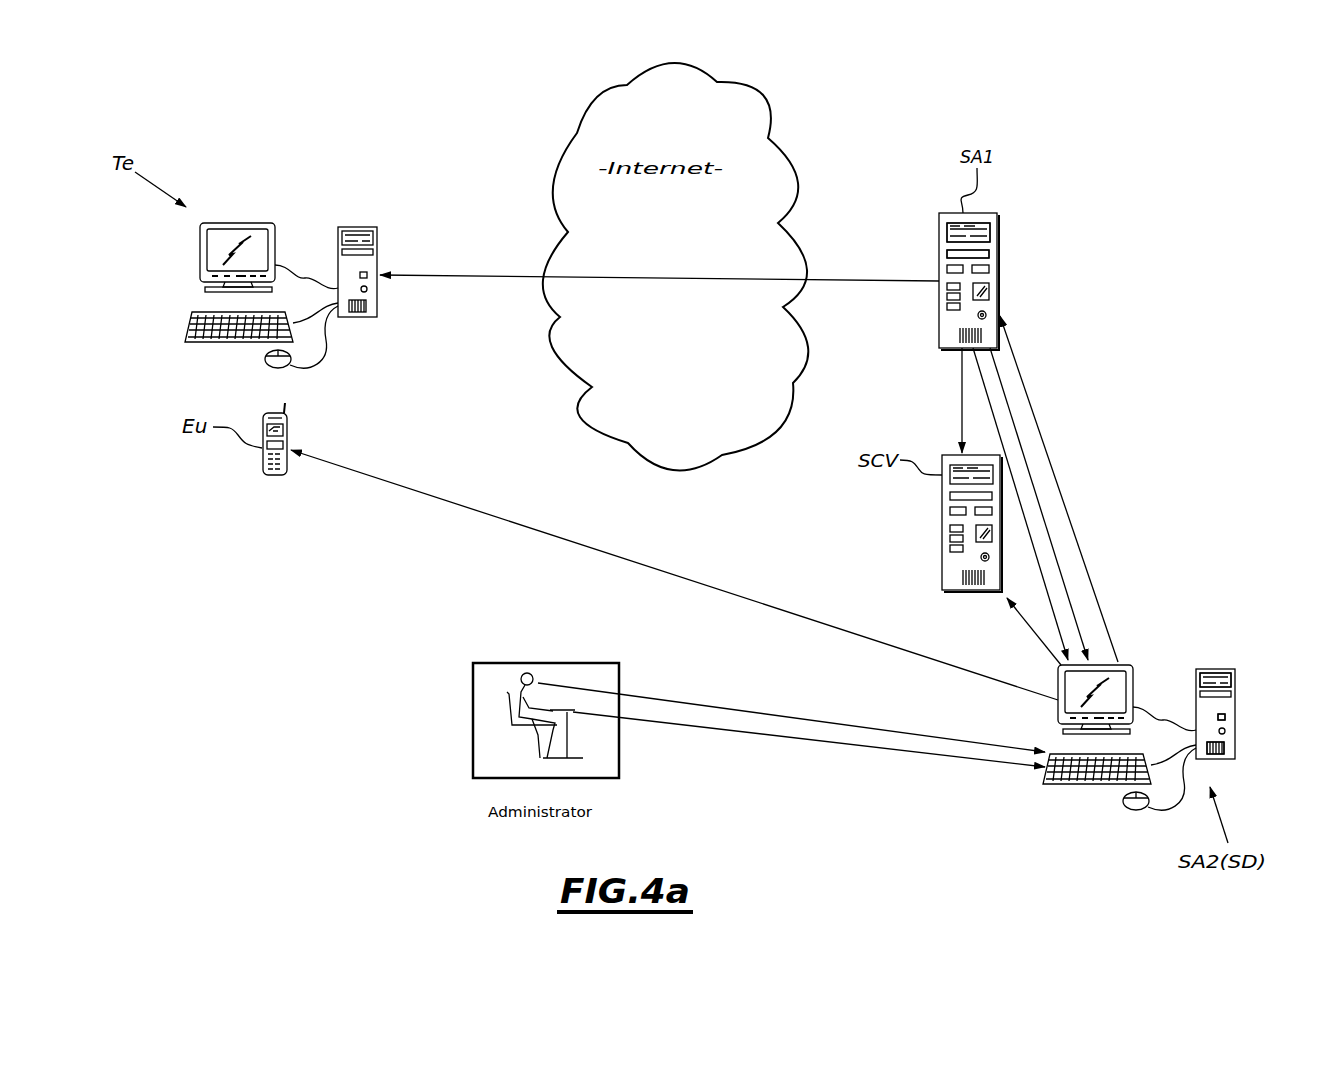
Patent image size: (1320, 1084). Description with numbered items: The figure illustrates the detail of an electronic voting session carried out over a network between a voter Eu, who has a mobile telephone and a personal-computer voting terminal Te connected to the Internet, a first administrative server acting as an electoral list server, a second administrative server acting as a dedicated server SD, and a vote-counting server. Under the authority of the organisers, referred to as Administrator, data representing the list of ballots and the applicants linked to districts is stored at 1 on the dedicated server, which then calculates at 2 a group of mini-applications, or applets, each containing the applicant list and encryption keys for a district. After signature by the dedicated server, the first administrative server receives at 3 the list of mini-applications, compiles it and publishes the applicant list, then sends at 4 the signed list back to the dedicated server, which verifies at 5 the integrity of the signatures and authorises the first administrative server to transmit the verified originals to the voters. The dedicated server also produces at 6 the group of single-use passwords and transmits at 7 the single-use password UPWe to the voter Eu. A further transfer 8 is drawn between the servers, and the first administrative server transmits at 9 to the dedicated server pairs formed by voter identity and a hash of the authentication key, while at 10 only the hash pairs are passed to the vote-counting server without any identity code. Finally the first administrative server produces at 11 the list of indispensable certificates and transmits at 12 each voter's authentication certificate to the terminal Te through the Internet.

The storing operation 1 is at (809, 739).
The mini-application calculating operation 2 is at (1235, 683).
The mini-application list receiving operation 3 is at (1059, 489).
The signed mini-application list sending operation 4 is at (1039, 504).
The integrity verification operation 5 is at (1235, 713).
The single-use password production operation 6 is at (1235, 743).
The single-use password transmission operation 7 is at (674, 575).
The data transmission 8 is at (803, 550).
The authentication key pair transmission operation 9 is at (997, 277).
The hash pair transmission operation 10 is at (1030, 631).
The certificate list production operation 11 is at (996, 246).
The authentication certificate transmission operation 12 is at (659, 266).